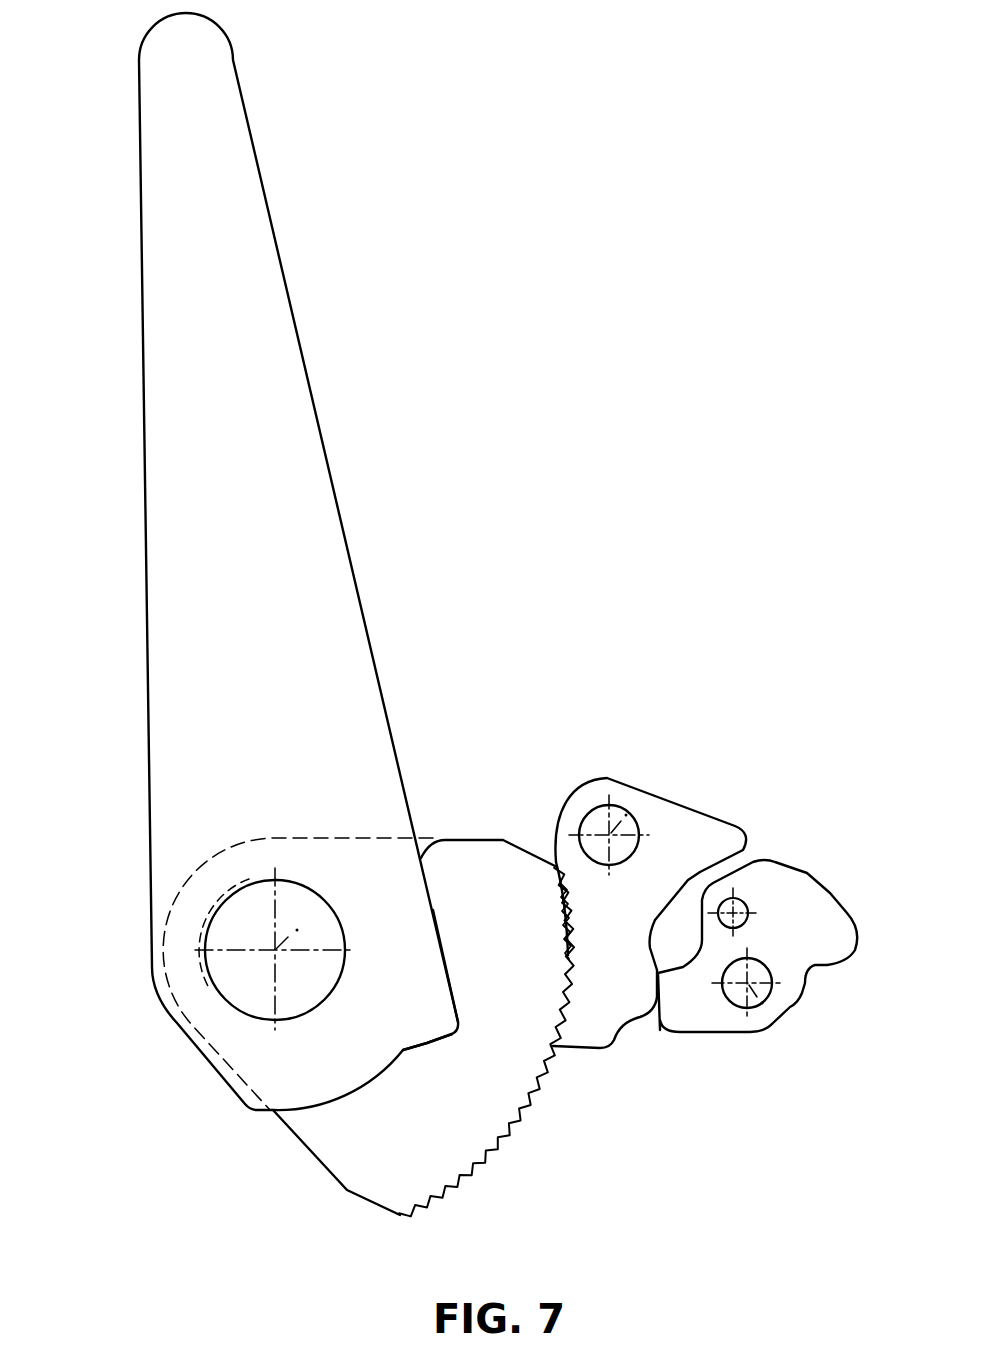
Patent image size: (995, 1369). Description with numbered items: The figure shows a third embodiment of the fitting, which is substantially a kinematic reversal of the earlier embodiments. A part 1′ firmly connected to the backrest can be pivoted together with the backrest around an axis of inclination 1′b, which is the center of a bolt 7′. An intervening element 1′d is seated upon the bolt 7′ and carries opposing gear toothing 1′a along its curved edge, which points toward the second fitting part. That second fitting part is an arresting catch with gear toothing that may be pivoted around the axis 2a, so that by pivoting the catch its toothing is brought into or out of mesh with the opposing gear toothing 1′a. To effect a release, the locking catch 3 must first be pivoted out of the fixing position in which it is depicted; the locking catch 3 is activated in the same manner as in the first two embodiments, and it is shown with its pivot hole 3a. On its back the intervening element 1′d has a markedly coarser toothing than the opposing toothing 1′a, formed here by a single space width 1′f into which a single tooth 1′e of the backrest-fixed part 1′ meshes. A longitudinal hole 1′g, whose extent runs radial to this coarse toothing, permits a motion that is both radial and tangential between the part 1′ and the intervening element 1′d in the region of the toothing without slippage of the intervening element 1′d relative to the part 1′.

The part firmly connected to the backrest 1′ is at (347, 541).
The opposing gear toothing 1′a is at (465, 1172).
The axis of inclination 1′b is at (313, 919).
The intervening element 1′d is at (341, 1147).
The tooth 1′e is at (452, 995).
The space width 1′f is at (450, 1015).
The longitudinal hole 1′g is at (233, 898).
The bolt 7′ is at (302, 884).
The axis 2a is at (614, 828).
The locking catch 3 is at (820, 892).
The bracket hole 3a is at (780, 1015).